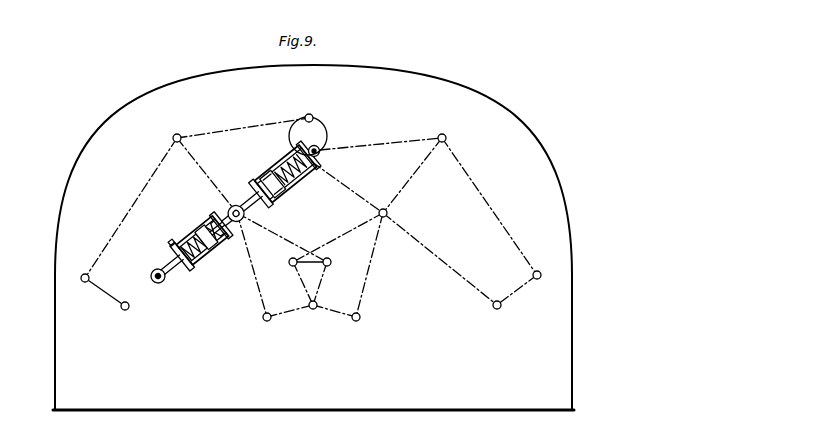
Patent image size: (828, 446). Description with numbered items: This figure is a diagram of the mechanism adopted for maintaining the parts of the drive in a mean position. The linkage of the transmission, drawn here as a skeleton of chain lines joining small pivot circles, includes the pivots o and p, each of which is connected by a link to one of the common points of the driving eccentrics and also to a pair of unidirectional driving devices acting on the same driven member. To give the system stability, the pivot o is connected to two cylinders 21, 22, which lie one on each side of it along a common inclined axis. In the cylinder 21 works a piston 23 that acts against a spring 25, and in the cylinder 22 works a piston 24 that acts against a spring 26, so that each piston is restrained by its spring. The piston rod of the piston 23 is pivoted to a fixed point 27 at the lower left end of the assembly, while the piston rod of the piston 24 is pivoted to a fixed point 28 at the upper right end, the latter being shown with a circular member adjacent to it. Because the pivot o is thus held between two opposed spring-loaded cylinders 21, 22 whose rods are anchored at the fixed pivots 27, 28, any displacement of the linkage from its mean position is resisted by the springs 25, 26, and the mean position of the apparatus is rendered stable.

The cylinder 21 is at (190, 236).
The cylinder 22 is at (296, 192).
The piston 23 is at (212, 250).
The piston 24 is at (284, 201).
The spring 25 is at (194, 268).
The spring 26 is at (312, 162).
The fixed pivot 27 is at (163, 283).
The fixed pivot 28 is at (323, 147).
The pivot O is at (230, 210).
The pivot p is at (388, 213).